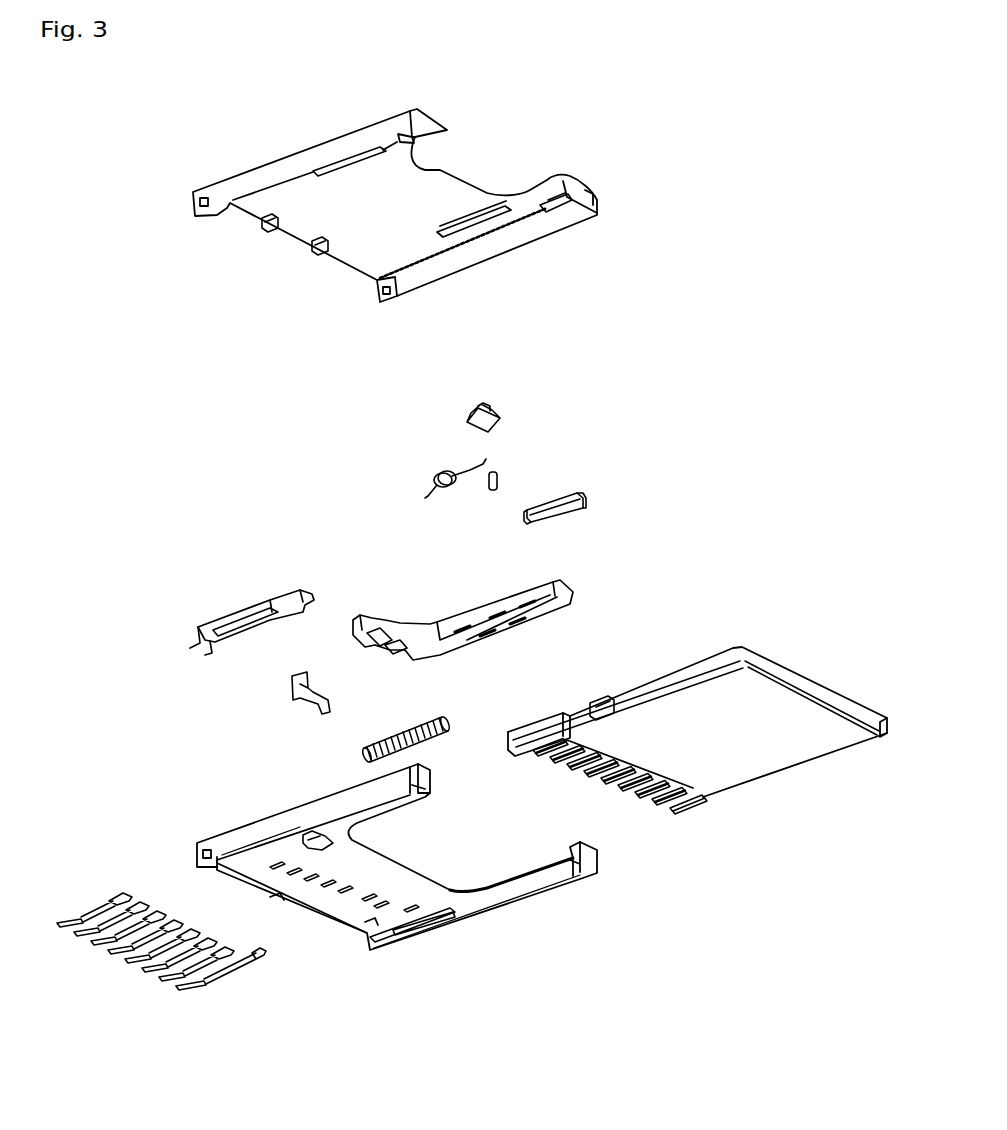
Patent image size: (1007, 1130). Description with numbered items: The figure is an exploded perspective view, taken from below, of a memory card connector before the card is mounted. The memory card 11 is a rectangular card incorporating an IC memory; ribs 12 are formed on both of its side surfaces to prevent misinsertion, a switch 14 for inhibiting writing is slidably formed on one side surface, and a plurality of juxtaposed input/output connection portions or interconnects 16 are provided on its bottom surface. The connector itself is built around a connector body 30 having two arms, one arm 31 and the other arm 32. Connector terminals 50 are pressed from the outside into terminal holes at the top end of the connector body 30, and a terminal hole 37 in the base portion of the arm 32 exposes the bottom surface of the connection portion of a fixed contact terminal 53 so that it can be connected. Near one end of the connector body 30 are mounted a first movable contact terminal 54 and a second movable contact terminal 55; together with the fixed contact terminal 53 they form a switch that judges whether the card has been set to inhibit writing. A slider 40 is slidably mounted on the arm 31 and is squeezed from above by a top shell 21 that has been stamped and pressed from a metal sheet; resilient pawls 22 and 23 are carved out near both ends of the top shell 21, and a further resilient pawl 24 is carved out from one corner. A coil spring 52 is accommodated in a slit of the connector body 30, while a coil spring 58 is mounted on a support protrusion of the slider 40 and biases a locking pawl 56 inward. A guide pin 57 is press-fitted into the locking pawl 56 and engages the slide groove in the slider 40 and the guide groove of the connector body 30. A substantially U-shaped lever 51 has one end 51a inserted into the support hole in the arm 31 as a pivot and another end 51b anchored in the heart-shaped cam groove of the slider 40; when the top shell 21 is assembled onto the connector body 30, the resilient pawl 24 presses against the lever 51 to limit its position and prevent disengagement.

The memory card 11 is at (777, 710).
The ribs 12 is at (697, 670).
The switch for inhibiting writing 14 is at (603, 693).
The input/output connection portions 16 is at (550, 750).
The top shell 21 is at (437, 185).
The resilient pawl 22 is at (343, 163).
The resilient pawl 23 is at (477, 223).
The resilient pawl 24 is at (560, 215).
The connector body 30 is at (387, 875).
The arm 31 is at (537, 882).
The arm 32 is at (303, 820).
The terminal hole 37 is at (313, 845).
The slider 40 is at (545, 590).
The connector terminals 50 is at (72, 918).
The lever 51 is at (553, 498).
The one end of the lever 51a is at (582, 505).
The other end of the lever 51b is at (527, 513).
The coil spring 52 is at (410, 733).
The fixed contact terminal 53 is at (297, 693).
The first movable contact terminal 54 is at (233, 617).
The second movable contact terminal 55 is at (250, 623).
The locking pawl 56 is at (484, 410).
The guide pin 57 is at (497, 478).
The coil spring 58 is at (438, 475).